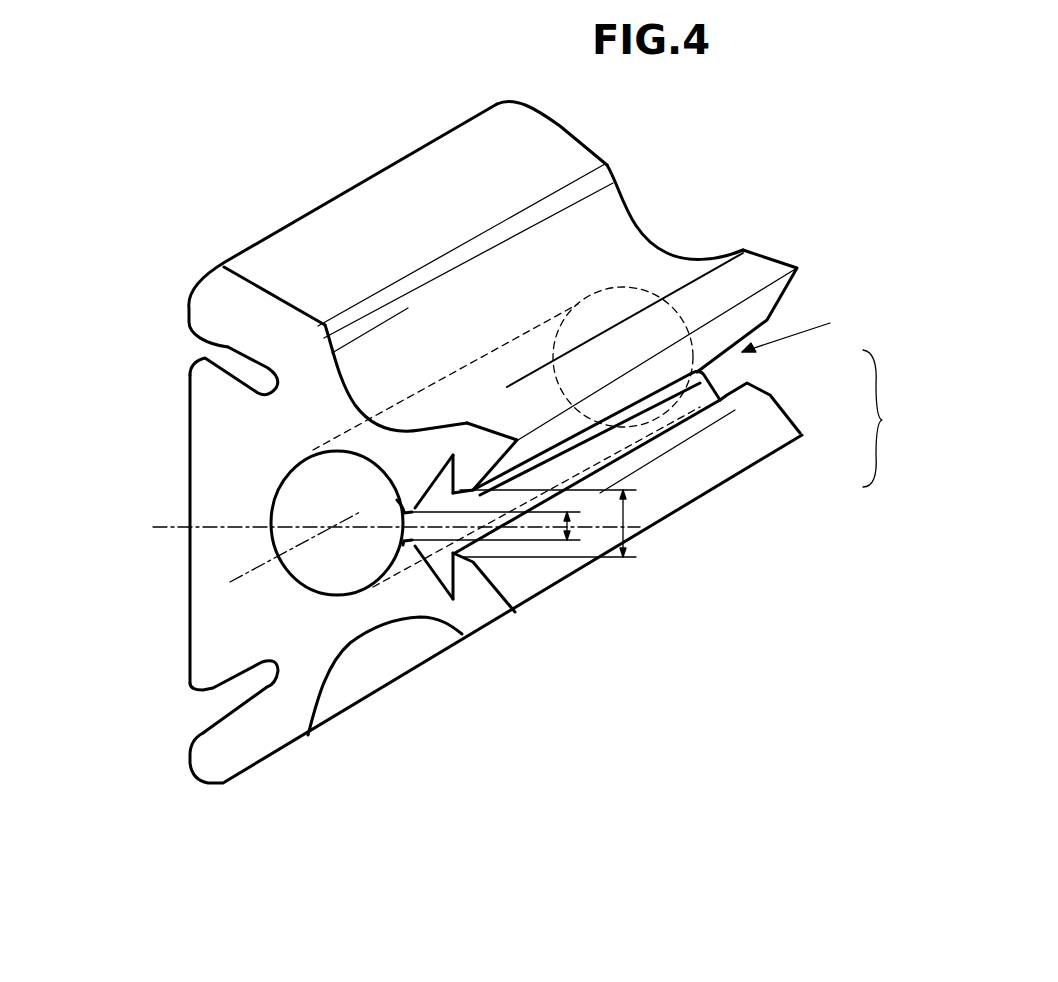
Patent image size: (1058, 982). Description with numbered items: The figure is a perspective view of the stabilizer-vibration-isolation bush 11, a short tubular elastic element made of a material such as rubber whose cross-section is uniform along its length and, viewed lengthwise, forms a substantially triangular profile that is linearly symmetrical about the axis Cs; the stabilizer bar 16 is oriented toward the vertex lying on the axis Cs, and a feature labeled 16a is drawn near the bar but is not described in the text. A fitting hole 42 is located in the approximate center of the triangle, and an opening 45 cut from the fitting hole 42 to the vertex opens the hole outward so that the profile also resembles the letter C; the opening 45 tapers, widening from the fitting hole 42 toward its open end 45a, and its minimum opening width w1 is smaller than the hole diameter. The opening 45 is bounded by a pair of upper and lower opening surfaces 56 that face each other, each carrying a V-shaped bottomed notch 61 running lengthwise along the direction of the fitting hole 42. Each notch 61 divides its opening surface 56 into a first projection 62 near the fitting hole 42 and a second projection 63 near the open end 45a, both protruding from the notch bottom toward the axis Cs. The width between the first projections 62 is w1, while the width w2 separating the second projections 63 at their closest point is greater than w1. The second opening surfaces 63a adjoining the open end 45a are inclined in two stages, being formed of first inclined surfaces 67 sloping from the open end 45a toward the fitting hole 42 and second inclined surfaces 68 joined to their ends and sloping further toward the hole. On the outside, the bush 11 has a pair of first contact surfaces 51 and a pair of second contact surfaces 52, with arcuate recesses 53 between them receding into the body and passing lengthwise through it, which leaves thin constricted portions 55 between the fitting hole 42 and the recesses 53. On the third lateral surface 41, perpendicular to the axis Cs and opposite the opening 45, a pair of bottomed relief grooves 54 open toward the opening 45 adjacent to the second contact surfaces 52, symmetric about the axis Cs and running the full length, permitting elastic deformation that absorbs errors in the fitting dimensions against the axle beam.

The bush 11 is at (331, 142).
The stabilizer bar 16 is at (758, 222).
The cable axis direction 16a is at (234, 583).
The third lateral surface 41 is at (212, 527).
The fitting hole 42 is at (288, 495).
The opening 45 is at (806, 316).
The open end 45a is at (770, 305).
The first contact surfaces 51 is at (765, 265).
The second contact surfaces 52 is at (461, 145).
The recesses 53 is at (352, 402).
The relief grooves 54 is at (227, 367).
The constricted portions 55 is at (380, 439).
The opening surfaces 56 is at (402, 517).
The notches 61 is at (445, 480).
The first projection 62 is at (412, 495).
The second projection 63 is at (470, 478).
The second opening surfaces 63a is at (691, 451).
The first inclined surfaces 67 is at (762, 320).
The second inclined surfaces 68 is at (755, 393).
The axis Cs is at (348, 541).
The minimum opening width w1 is at (584, 526).
The opening width w2 is at (640, 523).